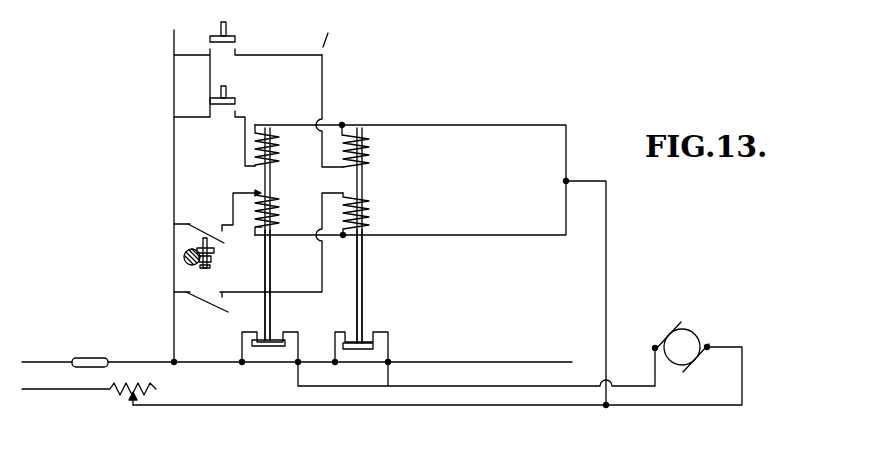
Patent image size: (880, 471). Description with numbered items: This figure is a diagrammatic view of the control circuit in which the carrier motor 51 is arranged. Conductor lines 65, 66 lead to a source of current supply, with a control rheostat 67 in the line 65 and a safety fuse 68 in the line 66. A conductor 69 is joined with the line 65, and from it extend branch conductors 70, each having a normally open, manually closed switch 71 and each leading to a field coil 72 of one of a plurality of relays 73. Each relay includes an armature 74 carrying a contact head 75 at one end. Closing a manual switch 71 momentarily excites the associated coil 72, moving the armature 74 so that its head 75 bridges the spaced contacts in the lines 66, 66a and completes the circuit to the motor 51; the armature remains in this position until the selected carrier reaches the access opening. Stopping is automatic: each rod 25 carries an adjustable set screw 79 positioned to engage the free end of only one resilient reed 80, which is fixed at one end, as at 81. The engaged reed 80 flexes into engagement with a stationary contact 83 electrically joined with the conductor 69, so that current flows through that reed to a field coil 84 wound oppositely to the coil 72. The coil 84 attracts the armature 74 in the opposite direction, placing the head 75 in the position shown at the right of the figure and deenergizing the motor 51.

The rod 25 is at (185, 256).
The motor 51 is at (690, 330).
The conductor line 65 is at (464, 406).
The conductor line 66 is at (140, 362).
The line 66a is at (318, 334).
The control rheostat 67 is at (122, 397).
The safety fuse 68 is at (92, 353).
The conductor 69 is at (176, 162).
The branch conductor 70 is at (190, 55).
The manually closed switch 71 is at (236, 31).
The field coil 72 is at (280, 150).
The relay 73 is at (277, 284).
The armature 74 is at (271, 179).
The contact head 75 is at (268, 347).
The adjustable set screw 79 is at (200, 240).
The resilient reed 80 is at (201, 228).
The fixed end of reed 81 is at (174, 224).
The stationary contact 83 is at (235, 228).
The field coil 84 is at (280, 212).